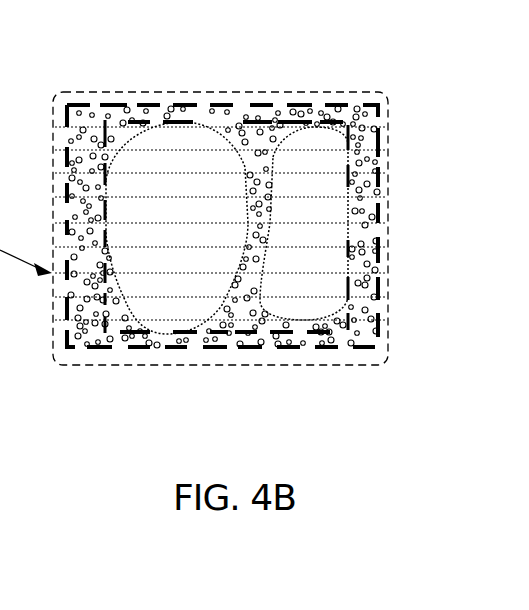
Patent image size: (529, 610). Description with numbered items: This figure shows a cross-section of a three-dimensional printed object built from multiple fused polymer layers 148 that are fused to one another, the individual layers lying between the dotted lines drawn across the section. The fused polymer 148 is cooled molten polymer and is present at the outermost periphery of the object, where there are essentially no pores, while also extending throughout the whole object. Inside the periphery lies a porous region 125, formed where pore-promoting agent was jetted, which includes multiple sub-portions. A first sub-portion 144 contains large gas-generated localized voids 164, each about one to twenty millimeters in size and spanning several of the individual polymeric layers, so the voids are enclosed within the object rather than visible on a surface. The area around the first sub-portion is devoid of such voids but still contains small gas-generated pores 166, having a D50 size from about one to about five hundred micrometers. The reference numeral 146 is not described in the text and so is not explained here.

The porous region 125 is at (110, 327).
The first sub-portion 144 is at (303, 333).
The outer frame strips 146 is at (348, 347).
The fused polymer layers 148 is at (260, 90).
The gas-generated localized void 164 is at (152, 140).
The pores 166 is at (203, 101).